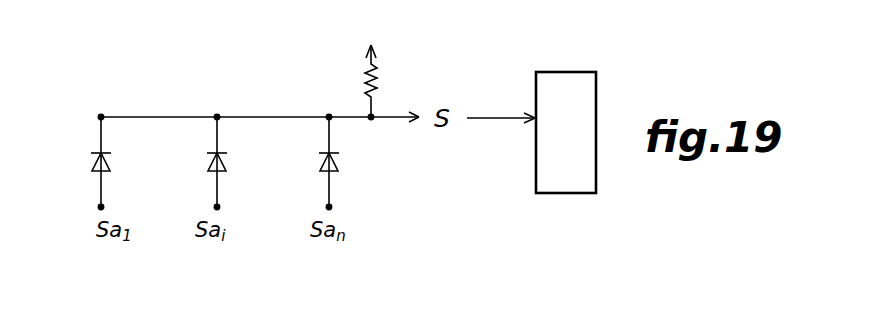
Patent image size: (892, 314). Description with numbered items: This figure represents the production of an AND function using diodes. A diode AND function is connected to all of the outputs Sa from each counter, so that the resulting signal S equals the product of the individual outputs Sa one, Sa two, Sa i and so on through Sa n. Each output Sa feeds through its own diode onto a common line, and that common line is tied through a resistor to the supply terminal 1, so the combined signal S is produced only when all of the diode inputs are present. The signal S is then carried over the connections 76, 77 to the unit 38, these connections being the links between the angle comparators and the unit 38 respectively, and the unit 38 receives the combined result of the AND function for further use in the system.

The supply voltage terminal 1 is at (379, 74).
The connection 76 is at (495, 71).
The connection 77 is at (489, 120).
The unit 38 is at (572, 145).